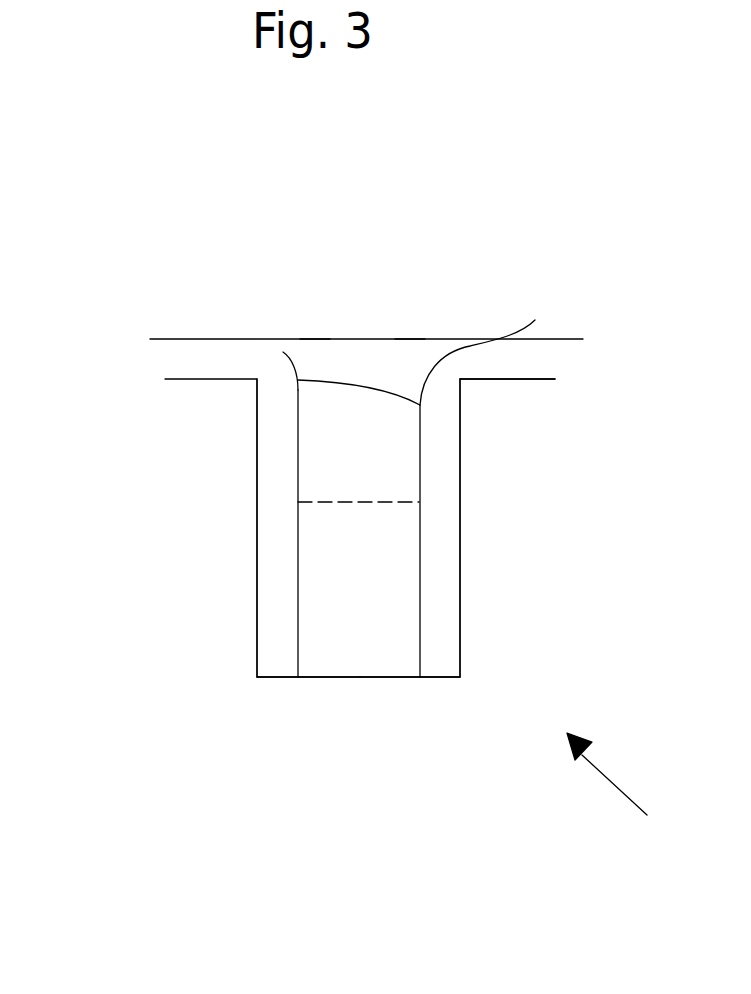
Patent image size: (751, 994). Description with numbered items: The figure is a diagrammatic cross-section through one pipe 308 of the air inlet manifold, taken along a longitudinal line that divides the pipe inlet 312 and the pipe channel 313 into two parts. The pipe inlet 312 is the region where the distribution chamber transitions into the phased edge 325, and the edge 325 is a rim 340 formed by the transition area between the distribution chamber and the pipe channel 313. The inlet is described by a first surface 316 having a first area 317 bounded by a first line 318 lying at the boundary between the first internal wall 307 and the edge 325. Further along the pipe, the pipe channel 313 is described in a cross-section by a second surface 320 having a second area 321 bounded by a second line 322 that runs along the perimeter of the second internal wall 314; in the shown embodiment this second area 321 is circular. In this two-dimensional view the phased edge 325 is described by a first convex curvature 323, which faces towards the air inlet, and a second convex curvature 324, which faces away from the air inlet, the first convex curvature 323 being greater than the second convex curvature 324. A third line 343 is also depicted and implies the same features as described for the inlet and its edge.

The first internal wall 307 is at (555, 339).
The pipe 308 is at (643, 795).
The pipe inlet 312 is at (293, 339).
The pipe channel 313 is at (365, 610).
The second internal wall 314 is at (325, 505).
The first surface 316 is at (315, 339).
The first area 317 is at (410, 340).
The first line 318 is at (535, 320).
The second surface 320 is at (298, 623).
The second area 321 is at (419, 600).
The second line 322 is at (298, 505).
The first convex curvature 323 is at (435, 363).
The second convex curvature 324 is at (285, 367).
The phased edge 325 is at (461, 398).
The rim 340 is at (283, 352).
The third line 343 is at (380, 393).